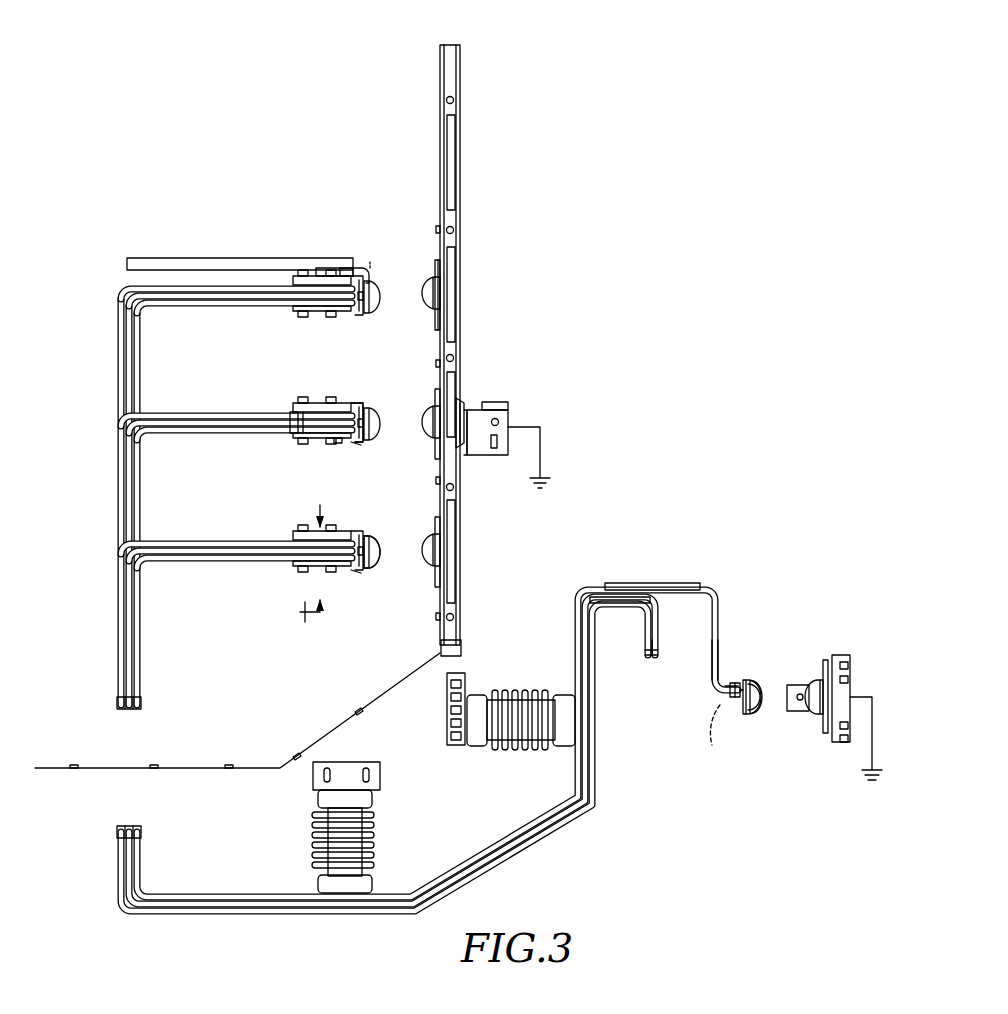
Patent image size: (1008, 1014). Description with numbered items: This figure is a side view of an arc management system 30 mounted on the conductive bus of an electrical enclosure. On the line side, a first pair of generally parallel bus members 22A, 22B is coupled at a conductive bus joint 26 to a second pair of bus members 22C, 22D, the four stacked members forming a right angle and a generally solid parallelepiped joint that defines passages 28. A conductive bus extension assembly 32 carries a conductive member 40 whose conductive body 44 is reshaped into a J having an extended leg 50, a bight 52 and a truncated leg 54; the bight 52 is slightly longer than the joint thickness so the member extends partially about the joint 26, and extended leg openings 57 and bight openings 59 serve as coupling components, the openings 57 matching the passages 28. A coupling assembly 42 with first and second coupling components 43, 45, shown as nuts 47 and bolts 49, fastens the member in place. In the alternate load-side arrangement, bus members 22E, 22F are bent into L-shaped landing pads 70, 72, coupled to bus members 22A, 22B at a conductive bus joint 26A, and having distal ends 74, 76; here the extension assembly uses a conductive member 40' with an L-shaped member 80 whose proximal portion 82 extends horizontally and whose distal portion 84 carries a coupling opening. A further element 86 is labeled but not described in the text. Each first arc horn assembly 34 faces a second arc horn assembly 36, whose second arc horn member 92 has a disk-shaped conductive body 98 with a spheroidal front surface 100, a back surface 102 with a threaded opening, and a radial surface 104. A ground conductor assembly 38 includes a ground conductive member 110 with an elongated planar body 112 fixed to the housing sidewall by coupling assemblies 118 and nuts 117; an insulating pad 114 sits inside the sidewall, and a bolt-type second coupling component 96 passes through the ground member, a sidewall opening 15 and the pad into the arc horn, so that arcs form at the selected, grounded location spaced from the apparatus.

The housing assembly sidewall opening 15 is at (462, 405).
The first pair bus member 22A is at (172, 288).
The first pair bus member 22B is at (167, 306).
The second pair bus member 22C is at (292, 285).
The second pair bus member 22D is at (312, 305).
The load side conductive bus member 22E is at (668, 584).
The load side conductive bus member 22F is at (659, 650).
The conductive bus joint 26 is at (309, 130).
The conductive bus joint 26A is at (638, 560).
The passages 28 is at (292, 414).
The arc management system 30 is at (264, 160).
The conductive bus extension assembly 32 is at (335, 280).
The first arc horn assembly 34 is at (372, 405).
The second arc horn assembly 36 is at (440, 295).
The ground conductor assembly 38 is at (520, 330).
The conductive member 40 is at (318, 320).
The conductive member 40' is at (790, 603).
The coupling assembly 42 is at (275, 443).
The first coupling component 43 is at (302, 525).
The conductive body 44 is at (354, 312).
The second coupling component 45 is at (302, 568).
The nuts 47 is at (293, 438).
The bolts 49 is at (292, 275).
The extended leg 50 is at (338, 280).
The bight 52 is at (380, 556).
The truncated leg 54 is at (360, 446).
The extended leg openings 57 is at (338, 443).
The bight openings 59 is at (374, 268).
The landing pad 70 is at (668, 660).
The landing pad 72 is at (737, 692).
The distal end 74 is at (659, 660).
The distal end 76 is at (712, 676).
The L-shaped member 80 is at (748, 688).
The proximal portion 82 is at (724, 684).
The distal portion 84 is at (735, 702).
The hidden fastener 86 is at (710, 740).
The second arc horn member 92 is at (425, 302).
The second coupling component 96 is at (358, 268).
The conductive body 98 is at (432, 282).
The front surface 100 is at (754, 698).
The back surface 102 is at (742, 714).
The radial surface 104 is at (758, 690).
The ground conductive member 110 is at (437, 265).
The planar body 112 is at (452, 398).
The insulating pad 114 is at (436, 455).
The nuts 117 is at (495, 412).
The coupling assemblies 118 is at (474, 512).